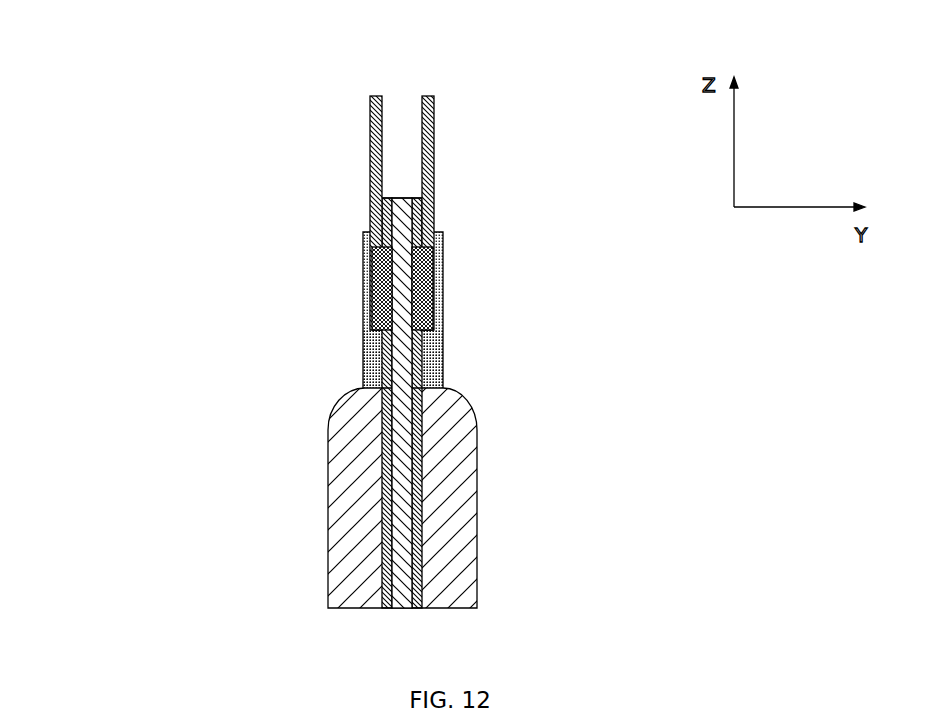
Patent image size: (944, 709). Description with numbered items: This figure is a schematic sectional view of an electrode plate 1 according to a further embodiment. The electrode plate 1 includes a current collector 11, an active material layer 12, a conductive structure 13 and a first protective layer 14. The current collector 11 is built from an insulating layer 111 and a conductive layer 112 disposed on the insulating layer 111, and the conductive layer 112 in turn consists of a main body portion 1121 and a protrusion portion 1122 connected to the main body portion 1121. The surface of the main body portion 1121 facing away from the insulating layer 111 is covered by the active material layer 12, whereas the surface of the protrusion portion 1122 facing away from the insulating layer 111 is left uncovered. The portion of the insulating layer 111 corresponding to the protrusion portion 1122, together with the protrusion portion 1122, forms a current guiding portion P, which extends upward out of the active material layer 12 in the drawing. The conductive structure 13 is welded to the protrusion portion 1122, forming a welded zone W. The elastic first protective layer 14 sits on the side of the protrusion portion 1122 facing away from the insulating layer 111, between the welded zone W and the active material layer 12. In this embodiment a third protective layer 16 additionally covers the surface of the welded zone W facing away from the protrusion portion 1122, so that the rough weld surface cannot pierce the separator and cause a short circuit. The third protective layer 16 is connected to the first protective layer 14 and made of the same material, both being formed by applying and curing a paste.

The electrode plate 1 is at (143, 243).
The current collector 11 is at (304, 403).
The insulating layer 111 is at (380, 471).
The conductive layer 112 is at (312, 403).
The main body portion 1121 is at (380, 430).
The protrusion portion 1122 is at (363, 360).
The active material layer 12 is at (477, 522).
The conductive structure 13 is at (370, 205).
The first protective layer 14 is at (443, 353).
The third protective layer 16 is at (372, 313).
The current guiding portion P is at (404, 186).
The welded zone W is at (443, 287).